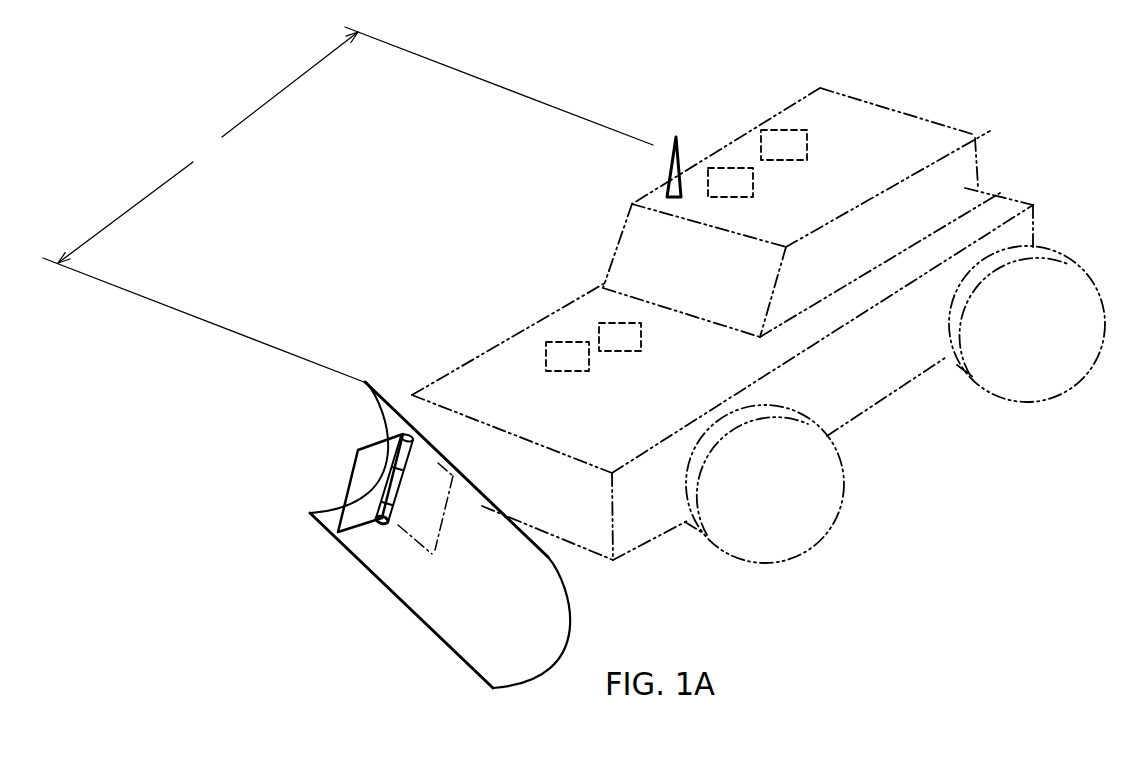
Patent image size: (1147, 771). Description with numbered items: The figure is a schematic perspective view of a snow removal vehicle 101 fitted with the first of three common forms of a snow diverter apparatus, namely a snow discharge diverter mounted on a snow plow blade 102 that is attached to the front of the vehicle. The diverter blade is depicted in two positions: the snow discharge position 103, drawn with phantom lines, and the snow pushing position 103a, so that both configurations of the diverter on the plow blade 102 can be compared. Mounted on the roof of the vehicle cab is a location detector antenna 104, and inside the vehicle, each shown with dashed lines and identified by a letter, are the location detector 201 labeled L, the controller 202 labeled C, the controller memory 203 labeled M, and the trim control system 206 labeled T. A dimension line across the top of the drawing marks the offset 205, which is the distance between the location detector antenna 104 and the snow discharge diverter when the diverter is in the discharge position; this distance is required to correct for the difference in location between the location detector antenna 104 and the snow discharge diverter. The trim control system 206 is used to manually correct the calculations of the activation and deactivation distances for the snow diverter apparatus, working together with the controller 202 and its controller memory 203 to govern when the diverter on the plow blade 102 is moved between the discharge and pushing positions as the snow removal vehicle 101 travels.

The snow removal vehicle 101 is at (435, 377).
The snow plow blade 102 is at (448, 653).
The snow discharge position 103 is at (413, 550).
The snow pushing position 103a is at (372, 478).
The location detector antenna 104 is at (713, 217).
The location detector 201 is at (770, 126).
The controller 202 is at (555, 340).
The controller memory 203 is at (605, 321).
The offset 205 is at (187, 128).
The trim control system 206 is at (720, 165).